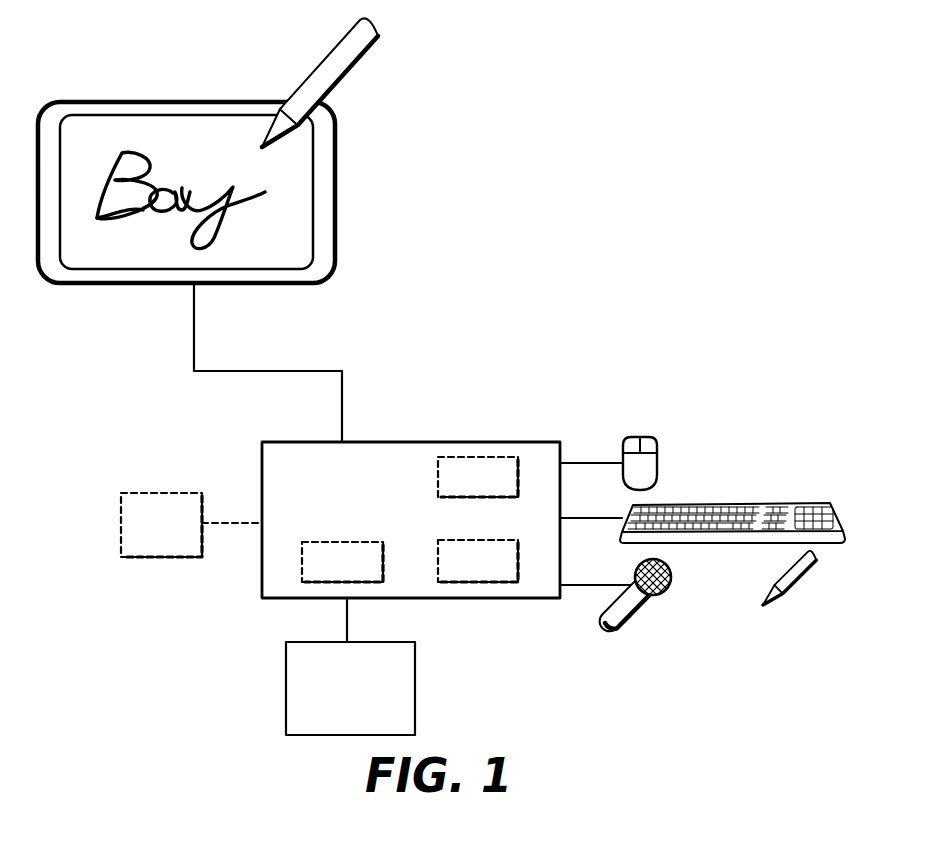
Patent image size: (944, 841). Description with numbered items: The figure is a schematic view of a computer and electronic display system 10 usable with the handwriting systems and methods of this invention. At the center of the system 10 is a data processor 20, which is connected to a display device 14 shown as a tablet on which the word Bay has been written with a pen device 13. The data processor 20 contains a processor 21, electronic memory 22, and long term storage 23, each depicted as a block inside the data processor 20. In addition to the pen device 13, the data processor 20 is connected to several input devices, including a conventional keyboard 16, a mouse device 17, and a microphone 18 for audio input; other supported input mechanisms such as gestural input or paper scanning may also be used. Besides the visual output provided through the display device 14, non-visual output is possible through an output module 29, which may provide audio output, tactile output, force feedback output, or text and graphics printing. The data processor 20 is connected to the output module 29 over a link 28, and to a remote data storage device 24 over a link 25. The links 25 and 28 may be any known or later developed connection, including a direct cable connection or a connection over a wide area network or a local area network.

The system 10 is at (487, 271).
The pen device 13 is at (370, 50).
The display device 14 is at (337, 223).
The keyboard 16 is at (782, 503).
The mouse device 17 is at (658, 462).
The microphones 18 is at (638, 613).
The data processor 20 is at (411, 497).
The processor 21 is at (330, 574).
The electronic memory 22 is at (466, 573).
The long term storage 23 is at (466, 488).
The remote data storage device 24 is at (338, 722).
The link 25 is at (345, 625).
The link 28 is at (237, 523).
The output module 29 is at (149, 535).